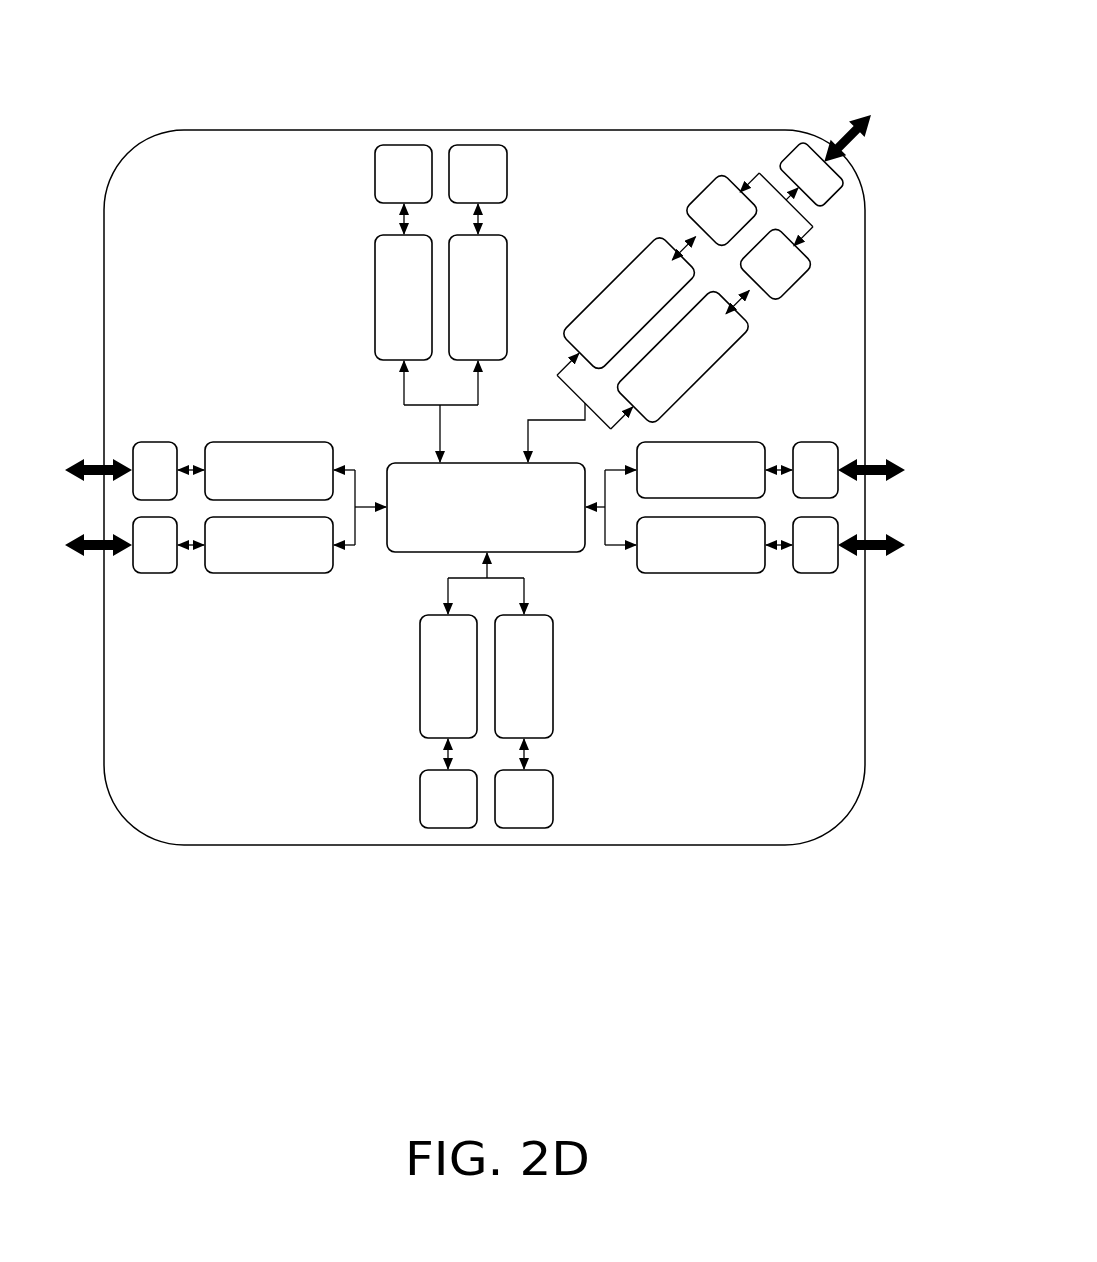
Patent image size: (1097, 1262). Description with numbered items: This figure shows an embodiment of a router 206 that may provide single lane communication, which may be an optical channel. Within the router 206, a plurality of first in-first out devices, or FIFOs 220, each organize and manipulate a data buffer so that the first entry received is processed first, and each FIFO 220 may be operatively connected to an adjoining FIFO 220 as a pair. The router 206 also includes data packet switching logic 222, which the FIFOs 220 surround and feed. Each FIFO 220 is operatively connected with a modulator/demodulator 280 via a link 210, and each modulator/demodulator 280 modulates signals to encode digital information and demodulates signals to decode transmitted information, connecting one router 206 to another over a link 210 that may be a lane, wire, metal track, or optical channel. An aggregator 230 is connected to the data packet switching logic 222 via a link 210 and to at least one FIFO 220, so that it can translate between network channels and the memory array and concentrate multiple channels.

The router 206 is at (151, 128).
The link 210 is at (192, 467).
The first in-first out device (FIFO) 220 is at (265, 465).
The data packet switching logic 222 is at (548, 541).
The aggregator 230 is at (801, 152).
The modulator/demodulator 280 is at (157, 453).